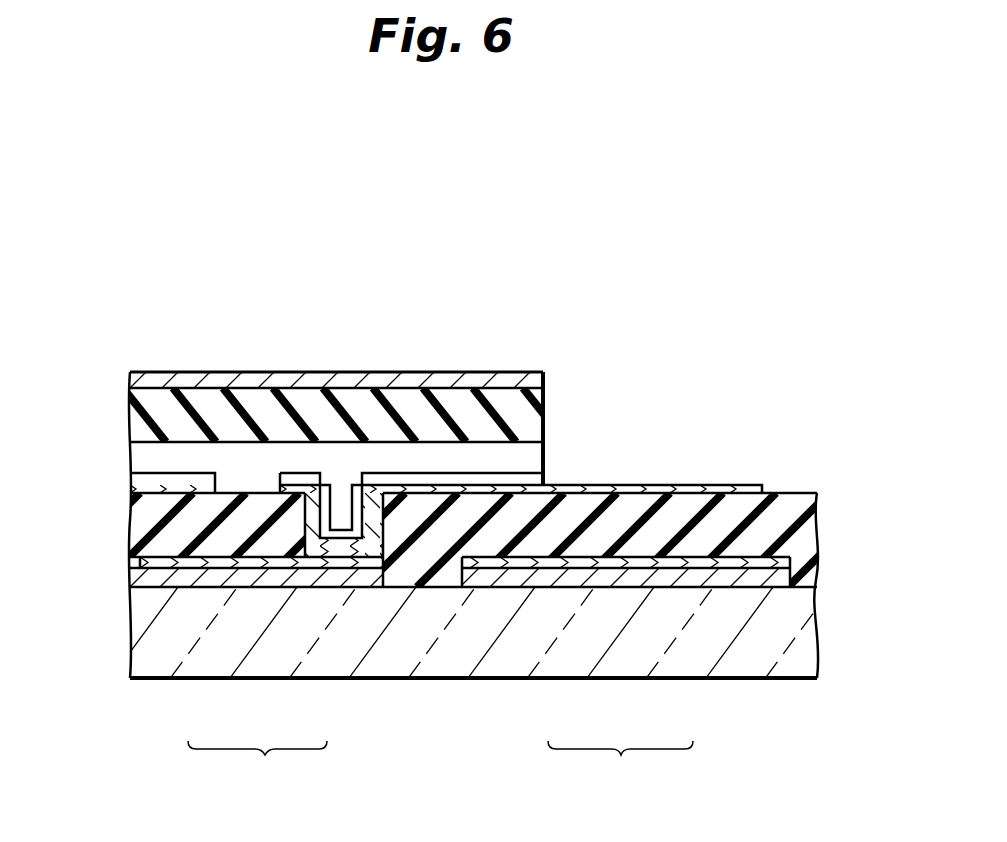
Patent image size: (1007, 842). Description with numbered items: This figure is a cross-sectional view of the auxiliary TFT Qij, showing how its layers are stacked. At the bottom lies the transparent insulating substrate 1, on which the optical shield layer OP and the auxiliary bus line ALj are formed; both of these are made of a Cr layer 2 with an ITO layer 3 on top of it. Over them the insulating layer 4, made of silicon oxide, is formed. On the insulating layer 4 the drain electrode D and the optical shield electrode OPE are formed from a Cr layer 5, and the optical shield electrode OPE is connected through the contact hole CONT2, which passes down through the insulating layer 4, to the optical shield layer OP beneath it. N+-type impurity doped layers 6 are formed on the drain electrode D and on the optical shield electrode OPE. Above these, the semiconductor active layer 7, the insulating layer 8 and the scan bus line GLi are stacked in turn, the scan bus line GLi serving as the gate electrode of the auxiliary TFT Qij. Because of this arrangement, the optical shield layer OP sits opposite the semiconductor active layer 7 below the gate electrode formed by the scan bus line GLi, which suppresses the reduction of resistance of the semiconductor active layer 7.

The transparent insulating substrate 1 is at (798, 633).
The Cr layer 2 is at (229, 576).
The ITO layer 3 is at (341, 564).
The insulating layer 4 is at (798, 546).
The Cr layer 5 is at (474, 454).
The N+-type impurity doped layers 6 is at (532, 480).
The semiconductor active layer 7 is at (528, 454).
The insulating layer 8 is at (528, 408).
The drain electrode D is at (175, 493).
The contact hole CONT2 is at (333, 480).
The scan bus line GLi is at (451, 372).
The optical shield electrode OPE is at (688, 485).
The optical shield layer OP is at (257, 764).
The auxiliary bus line ALj is at (620, 764).
The auxiliary TFT Qij is at (399, 299).